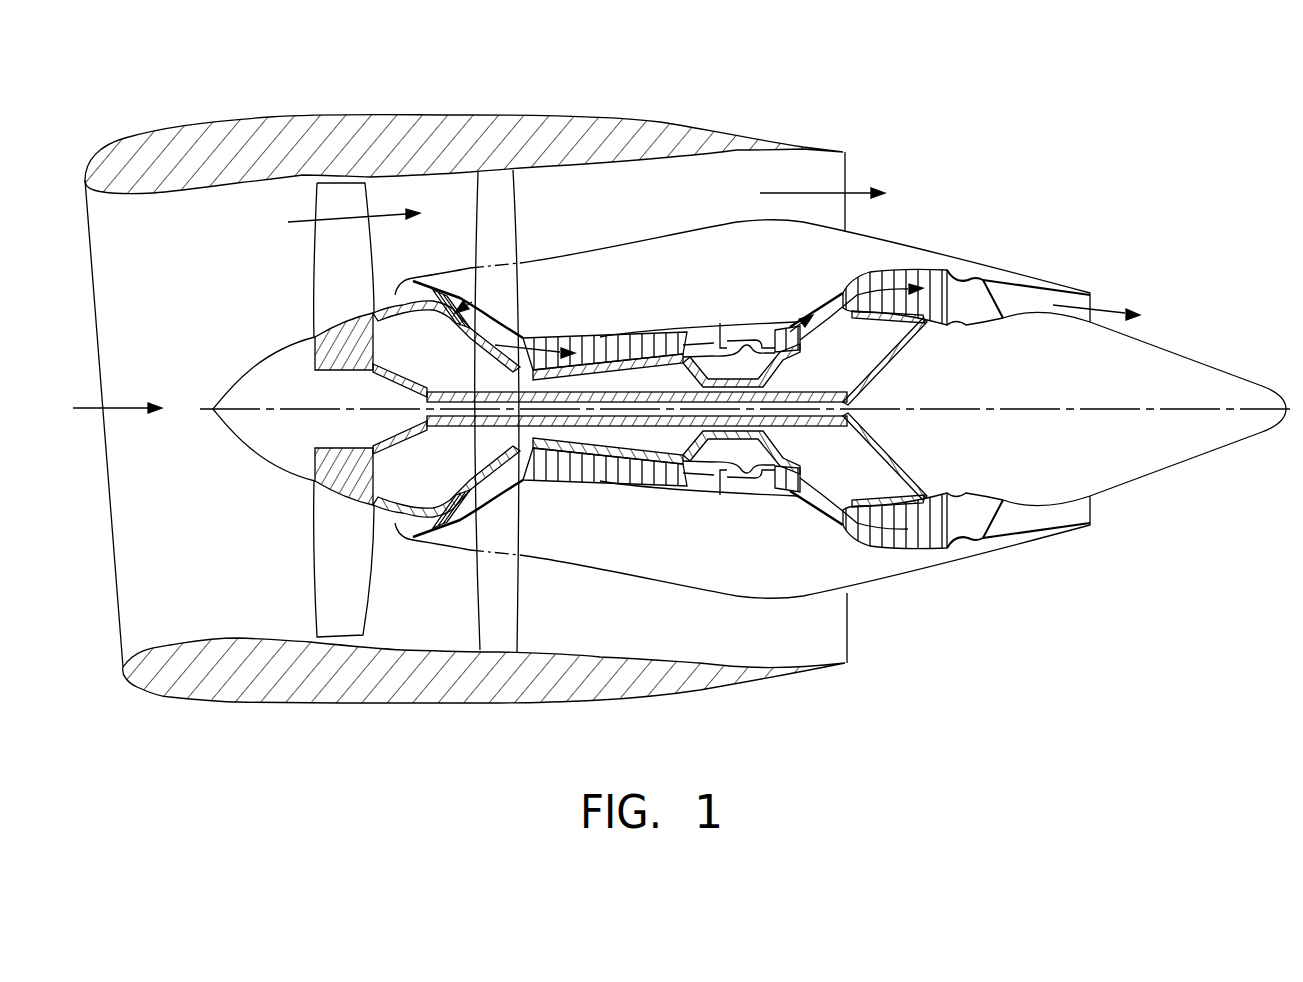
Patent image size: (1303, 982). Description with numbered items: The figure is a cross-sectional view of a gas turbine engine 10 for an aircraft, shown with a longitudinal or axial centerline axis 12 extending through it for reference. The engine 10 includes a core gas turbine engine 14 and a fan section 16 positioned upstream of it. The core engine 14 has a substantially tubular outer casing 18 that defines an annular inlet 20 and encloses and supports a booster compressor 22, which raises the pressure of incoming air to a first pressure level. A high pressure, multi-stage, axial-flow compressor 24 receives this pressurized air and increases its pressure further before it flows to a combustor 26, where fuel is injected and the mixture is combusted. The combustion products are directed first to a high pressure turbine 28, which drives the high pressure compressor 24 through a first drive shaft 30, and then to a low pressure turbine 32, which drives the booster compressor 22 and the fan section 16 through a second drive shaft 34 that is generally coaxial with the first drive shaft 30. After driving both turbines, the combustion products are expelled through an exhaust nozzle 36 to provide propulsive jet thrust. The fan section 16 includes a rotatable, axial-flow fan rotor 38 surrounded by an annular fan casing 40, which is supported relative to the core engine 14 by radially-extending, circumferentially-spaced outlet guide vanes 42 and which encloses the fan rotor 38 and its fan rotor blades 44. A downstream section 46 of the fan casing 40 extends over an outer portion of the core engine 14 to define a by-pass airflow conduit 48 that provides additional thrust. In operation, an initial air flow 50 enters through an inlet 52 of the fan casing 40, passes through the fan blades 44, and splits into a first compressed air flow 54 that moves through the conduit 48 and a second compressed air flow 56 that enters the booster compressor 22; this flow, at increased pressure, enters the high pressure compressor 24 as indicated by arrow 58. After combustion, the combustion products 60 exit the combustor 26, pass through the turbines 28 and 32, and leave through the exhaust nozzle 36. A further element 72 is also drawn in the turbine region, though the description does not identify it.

The gas turbine engine 10 is at (1003, 147).
The longitudinal or axial centerline axis 12 is at (1032, 405).
The core gas turbine engine 14 is at (693, 297).
The fan section 16 is at (366, 100).
The outer casing 18 is at (697, 587).
The annular inlet 20 is at (414, 525).
The booster compressor 22 is at (470, 487).
The high pressure compressor 24 is at (553, 470).
The combustor 26 is at (737, 487).
The first (high pressure) turbine 28 is at (797, 480).
The first (high pressure) drive shaft 30 is at (752, 370).
The second (low pressure) turbine 32 is at (938, 543).
The second (low pressure) drive shaft 34 is at (487, 387).
The exhaust nozzle 36 is at (1092, 300).
The fan rotor 38 is at (370, 377).
The fan casing 40 is at (358, 703).
The outlet guide vanes 42 is at (519, 211).
The fan rotor blades 44 is at (310, 573).
The downstream section of the fan casing 46 is at (745, 137).
The by-pass airflow conduit 48 is at (664, 207).
The initial air flow 50 is at (112, 406).
The inlet 52 is at (123, 650).
The first compressed air flow 54 is at (332, 215).
The second compressed air flow 56 is at (395, 295).
The air flow entering the high pressure compressor 58 is at (540, 337).
The combustion products 60 is at (788, 322).
The turbine nozzle 72 is at (757, 480).